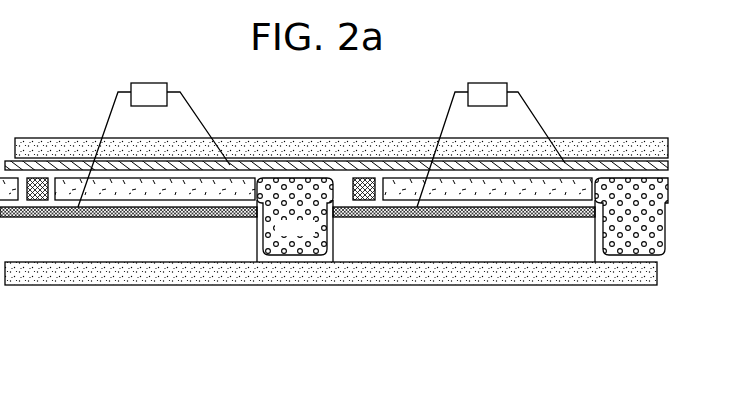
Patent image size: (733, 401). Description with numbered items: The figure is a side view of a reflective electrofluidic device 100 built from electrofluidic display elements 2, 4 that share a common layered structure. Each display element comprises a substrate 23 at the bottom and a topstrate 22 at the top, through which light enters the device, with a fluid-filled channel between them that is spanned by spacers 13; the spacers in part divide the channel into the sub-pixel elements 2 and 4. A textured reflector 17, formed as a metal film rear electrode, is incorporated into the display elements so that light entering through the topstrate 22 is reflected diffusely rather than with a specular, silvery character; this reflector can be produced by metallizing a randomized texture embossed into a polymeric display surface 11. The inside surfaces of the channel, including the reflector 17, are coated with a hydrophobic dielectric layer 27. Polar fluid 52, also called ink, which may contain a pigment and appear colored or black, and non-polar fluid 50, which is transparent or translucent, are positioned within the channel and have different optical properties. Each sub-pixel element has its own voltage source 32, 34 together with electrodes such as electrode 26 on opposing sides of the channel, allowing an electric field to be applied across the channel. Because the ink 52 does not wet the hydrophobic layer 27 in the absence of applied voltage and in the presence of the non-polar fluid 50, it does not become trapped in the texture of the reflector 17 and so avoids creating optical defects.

The electrofluidic device 100 is at (92, 45).
The topstrate 22 is at (41, 130).
The electrode 26 is at (62, 160).
The voltage source 32 is at (154, 145).
The voltage source 34 is at (491, 145).
The hydrophobic dielectric layer 27 is at (462, 237).
The spacers 13 is at (372, 178).
The non-polar fluid 50 is at (296, 189).
The polar fluid 52 is at (295, 228).
The textured reflector 17 is at (230, 217).
The polymeric display surface 11 is at (32, 250).
The substrate 23 is at (100, 272).
The sub-pixel element 2 is at (331, 314).
The sub-pixel element 4 is at (520, 310).